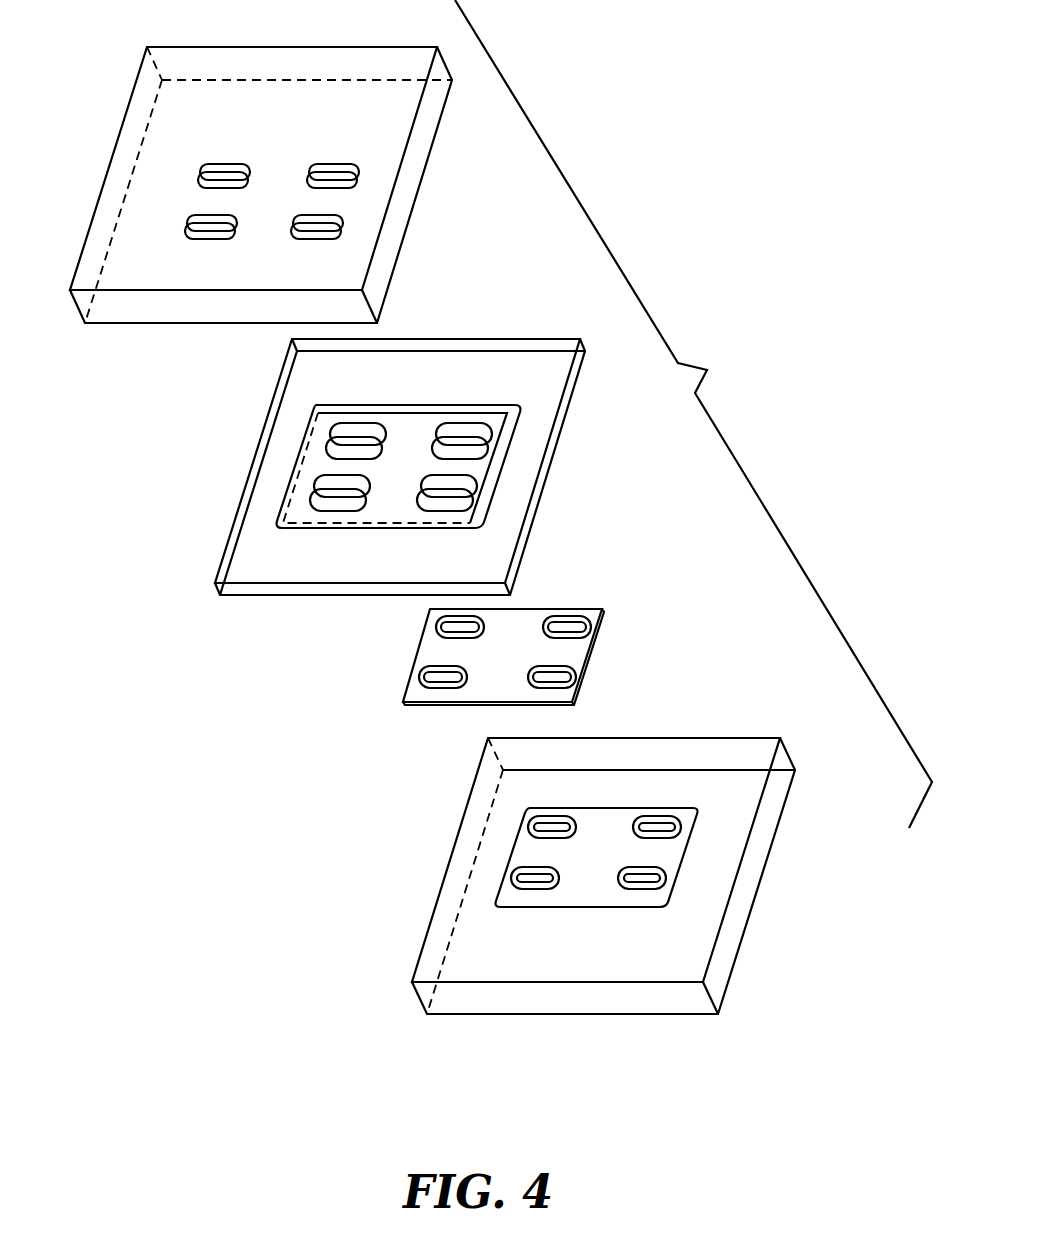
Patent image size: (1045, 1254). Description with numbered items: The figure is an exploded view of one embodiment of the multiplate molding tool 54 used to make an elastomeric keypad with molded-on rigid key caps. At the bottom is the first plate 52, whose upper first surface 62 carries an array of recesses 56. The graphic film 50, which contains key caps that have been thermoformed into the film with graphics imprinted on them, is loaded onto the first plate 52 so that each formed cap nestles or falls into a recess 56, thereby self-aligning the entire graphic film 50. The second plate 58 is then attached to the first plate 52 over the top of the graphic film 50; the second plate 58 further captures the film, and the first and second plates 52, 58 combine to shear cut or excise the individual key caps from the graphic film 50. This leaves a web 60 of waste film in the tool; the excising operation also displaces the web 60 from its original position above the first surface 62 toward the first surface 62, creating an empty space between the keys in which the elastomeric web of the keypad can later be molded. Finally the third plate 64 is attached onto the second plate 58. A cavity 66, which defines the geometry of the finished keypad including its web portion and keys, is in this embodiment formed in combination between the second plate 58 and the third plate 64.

The graphic film 50 is at (582, 610).
The first plate 52 is at (713, 868).
The multiplate molding tool 54 is at (693, 414).
The recess 56 is at (662, 830).
The second plate 58 is at (537, 440).
The web 60 is at (572, 652).
The first surface 62 is at (590, 860).
The third plate 64 is at (140, 107).
The cavity 66 is at (495, 420).